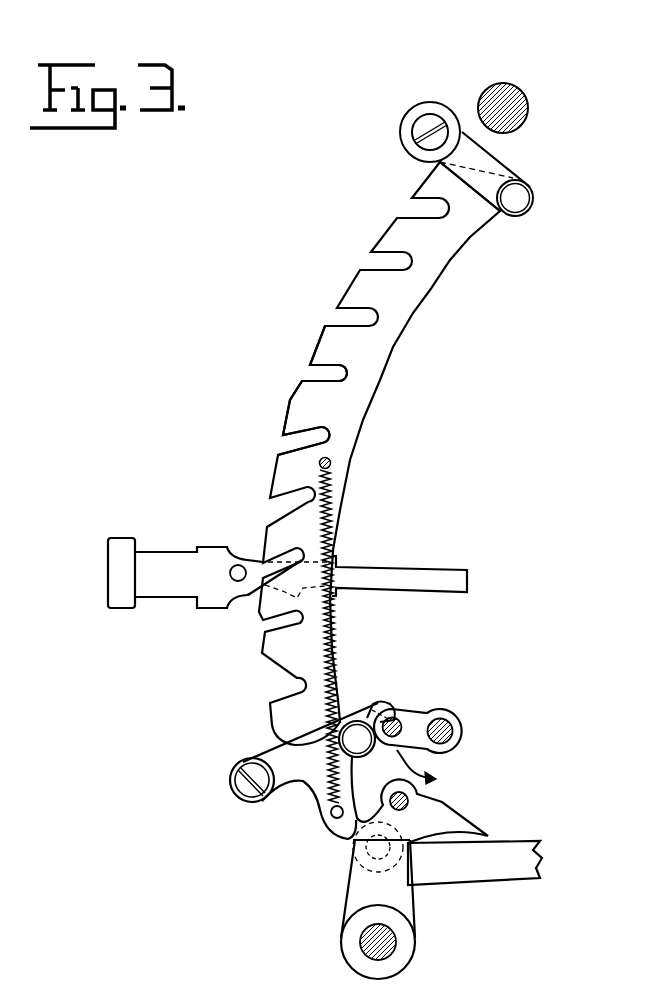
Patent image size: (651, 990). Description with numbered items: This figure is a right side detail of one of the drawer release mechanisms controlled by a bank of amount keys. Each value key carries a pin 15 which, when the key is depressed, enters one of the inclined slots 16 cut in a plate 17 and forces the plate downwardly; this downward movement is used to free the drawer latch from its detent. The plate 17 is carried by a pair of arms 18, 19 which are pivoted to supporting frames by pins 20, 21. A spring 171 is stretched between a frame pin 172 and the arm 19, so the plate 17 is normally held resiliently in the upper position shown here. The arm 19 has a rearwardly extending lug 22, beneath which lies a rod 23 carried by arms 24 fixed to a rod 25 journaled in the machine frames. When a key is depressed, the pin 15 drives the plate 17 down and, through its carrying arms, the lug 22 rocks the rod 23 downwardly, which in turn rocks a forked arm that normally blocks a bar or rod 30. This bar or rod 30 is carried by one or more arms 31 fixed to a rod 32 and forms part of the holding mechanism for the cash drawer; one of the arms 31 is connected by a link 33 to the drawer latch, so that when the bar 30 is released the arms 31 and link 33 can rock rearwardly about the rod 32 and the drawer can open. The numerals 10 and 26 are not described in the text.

The push button plunger 10 is at (120, 538).
The pin 15 is at (240, 566).
The inclined slots 16 is at (322, 370).
The plate 17 is at (375, 350).
The spring 171 is at (338, 525).
The frame pin 172 is at (331, 462).
The arm 18 is at (462, 142).
The arm 19 is at (285, 797).
The pin 20 is at (427, 142).
The pin 21 is at (243, 783).
The rearwardly extending lug 22 is at (378, 703).
The rod 23 is at (397, 723).
The arms 24 is at (445, 757).
The rod 25 is at (447, 730).
The cam lever 26 is at (442, 803).
The bar or rod 30 is at (398, 805).
The arms 31 is at (357, 897).
The rod 32 is at (397, 938).
The link 33 is at (513, 858).